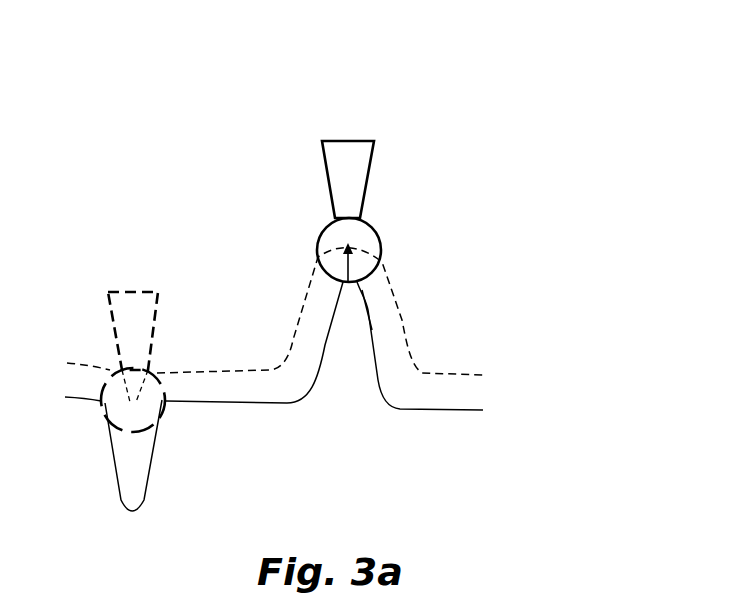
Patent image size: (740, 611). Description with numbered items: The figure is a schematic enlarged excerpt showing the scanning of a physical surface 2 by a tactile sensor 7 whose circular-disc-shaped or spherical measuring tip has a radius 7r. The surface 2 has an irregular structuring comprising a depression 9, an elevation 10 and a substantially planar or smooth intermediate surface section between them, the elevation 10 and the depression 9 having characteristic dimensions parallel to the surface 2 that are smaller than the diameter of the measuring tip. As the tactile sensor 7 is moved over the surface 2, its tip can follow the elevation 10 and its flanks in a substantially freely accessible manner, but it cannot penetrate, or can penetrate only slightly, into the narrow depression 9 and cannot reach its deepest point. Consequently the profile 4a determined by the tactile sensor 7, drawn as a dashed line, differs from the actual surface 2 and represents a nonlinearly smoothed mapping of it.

The surface 2 is at (483, 410).
The profile 4a is at (483, 375).
The tactile sensor 7 is at (360, 128).
The radius 7r is at (345, 256).
The depression 9 is at (155, 467).
The elevation 10 is at (368, 310).